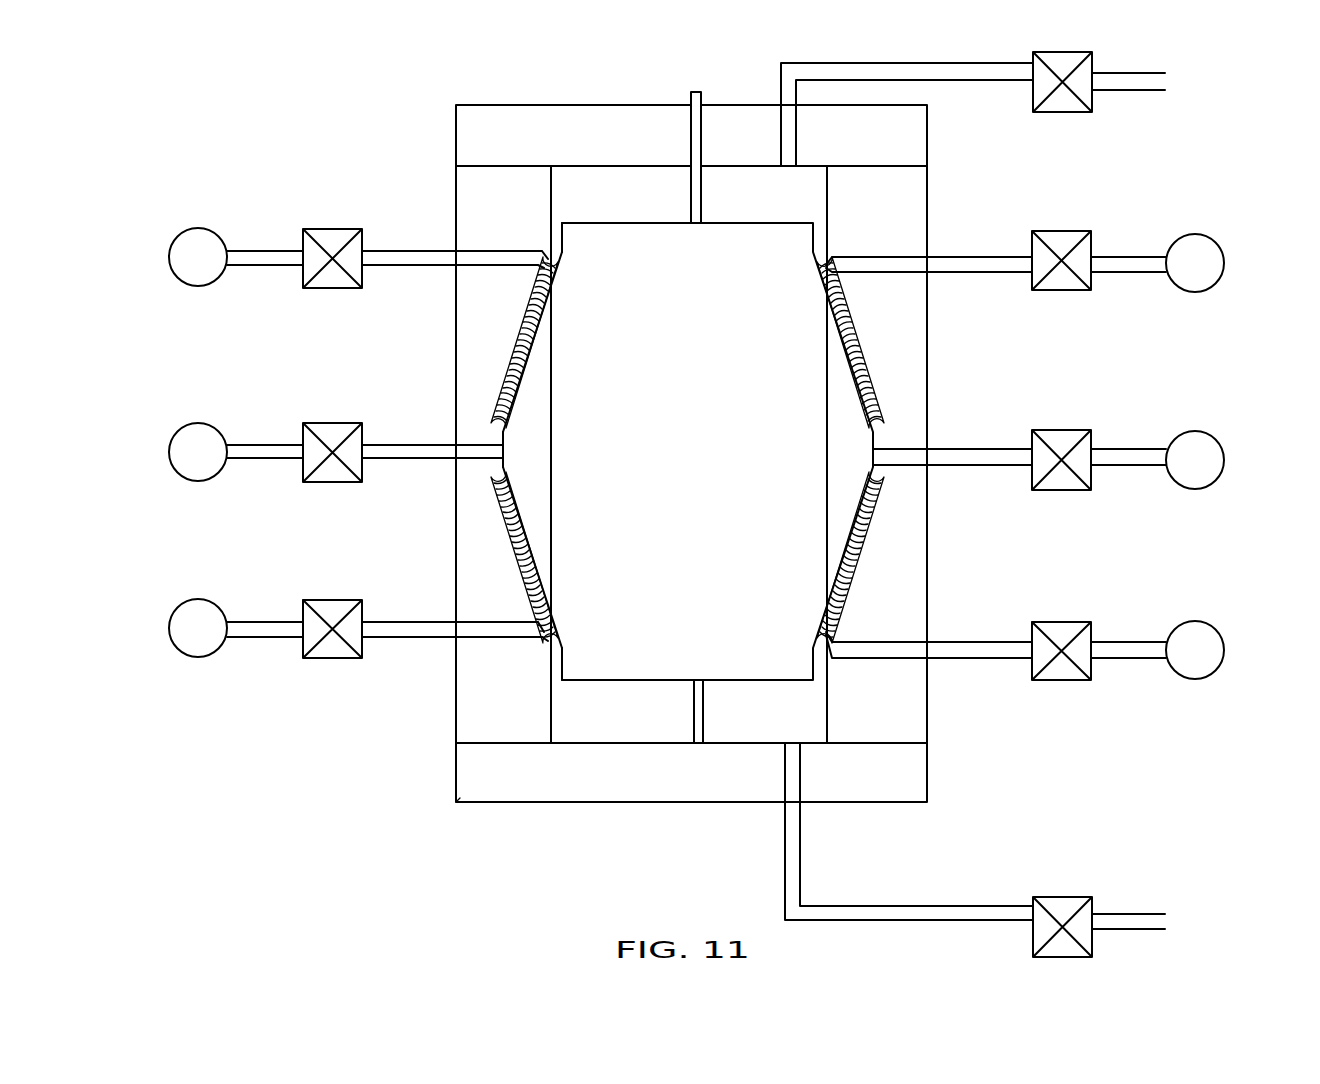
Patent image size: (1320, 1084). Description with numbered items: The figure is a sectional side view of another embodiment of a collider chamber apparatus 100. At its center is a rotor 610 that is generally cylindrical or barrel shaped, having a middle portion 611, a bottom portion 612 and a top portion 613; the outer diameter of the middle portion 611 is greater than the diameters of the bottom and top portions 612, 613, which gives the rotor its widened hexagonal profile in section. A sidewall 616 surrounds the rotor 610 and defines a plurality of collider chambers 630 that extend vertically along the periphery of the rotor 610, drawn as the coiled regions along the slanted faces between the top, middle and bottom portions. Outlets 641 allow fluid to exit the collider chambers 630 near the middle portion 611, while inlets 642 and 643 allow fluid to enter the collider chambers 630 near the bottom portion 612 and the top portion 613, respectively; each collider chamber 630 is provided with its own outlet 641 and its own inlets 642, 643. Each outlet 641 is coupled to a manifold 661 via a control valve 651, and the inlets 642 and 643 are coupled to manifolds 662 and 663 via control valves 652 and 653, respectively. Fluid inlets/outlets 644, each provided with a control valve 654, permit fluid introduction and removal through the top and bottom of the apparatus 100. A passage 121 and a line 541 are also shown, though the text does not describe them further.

The collider chamber apparatus 100 is at (405, 803).
The exhaust tube 121 is at (705, 716).
The gas supply pipe 541 is at (387, 444).
The rotor 610 is at (605, 222).
The middle portion 611 is at (505, 451).
The bottom portion 612 is at (565, 658).
The top portion 613 is at (565, 246).
The sidewall 616 is at (456, 713).
The collider chambers 630 is at (515, 338).
The outlets 641 is at (1007, 448).
The inlets 642 is at (398, 621).
The inlets 643 is at (398, 250).
The fluid inlets/outlets 644 is at (952, 83).
The control valve 651 is at (330, 422).
The control valve 652 is at (330, 599).
The control valve 653 is at (330, 228).
The control valves 654 is at (1063, 113).
The manifold 661 is at (198, 422).
The manifold 662 is at (198, 598).
The manifold 663 is at (198, 227).